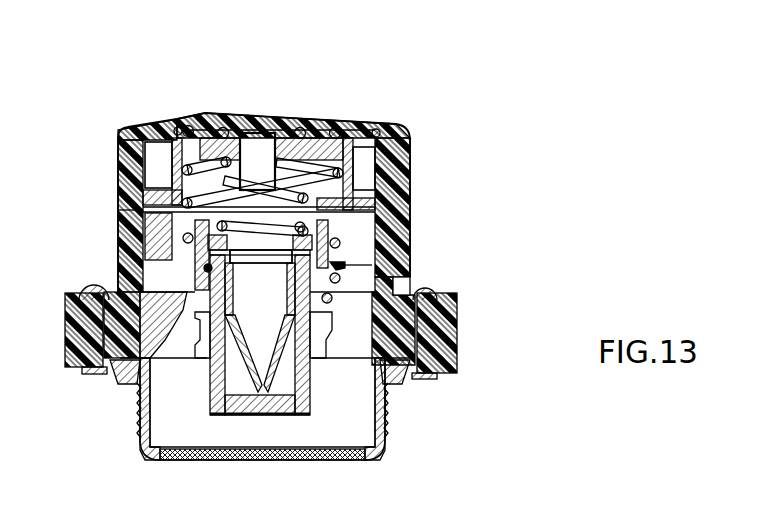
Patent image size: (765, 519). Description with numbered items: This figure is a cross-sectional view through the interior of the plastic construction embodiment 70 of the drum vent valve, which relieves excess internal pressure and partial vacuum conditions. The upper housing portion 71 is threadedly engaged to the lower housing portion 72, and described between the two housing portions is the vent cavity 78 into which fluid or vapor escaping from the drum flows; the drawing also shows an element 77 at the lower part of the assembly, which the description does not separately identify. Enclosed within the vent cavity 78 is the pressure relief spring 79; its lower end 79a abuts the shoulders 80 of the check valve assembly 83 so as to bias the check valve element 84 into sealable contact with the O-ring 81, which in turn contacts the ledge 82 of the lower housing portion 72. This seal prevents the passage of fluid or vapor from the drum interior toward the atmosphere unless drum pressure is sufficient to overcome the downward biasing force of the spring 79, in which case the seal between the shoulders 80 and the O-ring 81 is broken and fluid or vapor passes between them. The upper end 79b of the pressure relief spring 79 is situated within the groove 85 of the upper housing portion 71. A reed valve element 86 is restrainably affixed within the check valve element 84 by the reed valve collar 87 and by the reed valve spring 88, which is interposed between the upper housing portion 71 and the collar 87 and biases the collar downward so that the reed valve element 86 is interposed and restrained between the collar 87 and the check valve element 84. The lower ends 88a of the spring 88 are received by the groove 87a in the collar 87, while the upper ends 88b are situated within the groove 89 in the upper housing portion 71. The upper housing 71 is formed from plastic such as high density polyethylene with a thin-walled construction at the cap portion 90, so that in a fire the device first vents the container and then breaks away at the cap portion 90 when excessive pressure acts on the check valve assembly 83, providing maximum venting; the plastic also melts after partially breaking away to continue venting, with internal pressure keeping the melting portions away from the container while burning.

The plastic construction embodiment 70 is at (414, 142).
The upper housing portion 71 is at (413, 213).
The lower housing portion 72 is at (400, 286).
The container cup 77 is at (135, 420).
The vent cavity 78 is at (160, 230).
The pressure relief spring 79 is at (405, 237).
The lower end of pressure relief spring 79a is at (135, 270).
The upper end of pressure relief spring 79b is at (182, 130).
The shoulders 80 is at (66, 341).
The O-ring 81 is at (175, 330).
The ledge 82 is at (84, 371).
The check valve assembly 83 is at (390, 254).
The check valve element 84 is at (145, 244).
The groove 85 is at (183, 116).
The reed valve element 86 is at (298, 335).
The reed valve collar 87 is at (390, 180).
The groove in collar 87a is at (289, 276).
The reed valve spring 88 is at (258, 135).
The lower ends of reed valve spring 88a is at (175, 176).
The upper ends of reed valve spring 88b is at (212, 156).
The groove in upper housing member 89 is at (223, 127).
The cap portion 90 is at (350, 128).